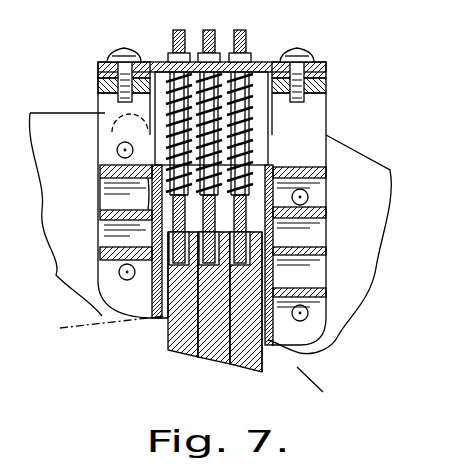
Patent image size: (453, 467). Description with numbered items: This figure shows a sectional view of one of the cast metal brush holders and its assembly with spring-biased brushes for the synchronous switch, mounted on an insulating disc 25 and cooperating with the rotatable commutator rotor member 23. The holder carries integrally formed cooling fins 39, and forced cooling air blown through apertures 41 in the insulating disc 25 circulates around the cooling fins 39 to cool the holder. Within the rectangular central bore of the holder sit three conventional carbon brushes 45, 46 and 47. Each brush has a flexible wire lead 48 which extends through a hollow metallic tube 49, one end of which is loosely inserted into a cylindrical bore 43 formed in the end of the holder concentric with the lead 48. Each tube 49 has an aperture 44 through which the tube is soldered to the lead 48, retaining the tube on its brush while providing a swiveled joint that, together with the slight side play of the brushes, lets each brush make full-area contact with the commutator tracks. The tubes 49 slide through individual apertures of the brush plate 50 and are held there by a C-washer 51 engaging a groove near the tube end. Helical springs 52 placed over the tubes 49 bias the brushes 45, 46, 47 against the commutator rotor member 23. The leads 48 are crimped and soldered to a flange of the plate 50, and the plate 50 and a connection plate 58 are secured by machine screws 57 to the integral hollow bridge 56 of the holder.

The commutator rotor member 23 is at (322, 373).
The insulating disc 25 is at (336, 316).
The cooling fins 39 is at (327, 244).
The apertures 41 is at (162, 338).
The cylindrical bore 43 is at (170, 232).
The aperture 44 is at (243, 136).
The carbon brush 45 is at (178, 352).
The carbon brush 46 is at (208, 360).
The carbon brush 47 is at (235, 366).
The flexible wire lead 48 is at (212, 30).
The hollow metallic tube 49 is at (268, 106).
The brush plate 50 is at (262, 62).
The C-washer 51 is at (250, 55).
The helical spring 52 is at (245, 158).
The bridge 56 is at (318, 132).
The machine screw 57 is at (122, 58).
The connection plate 58 is at (328, 75).